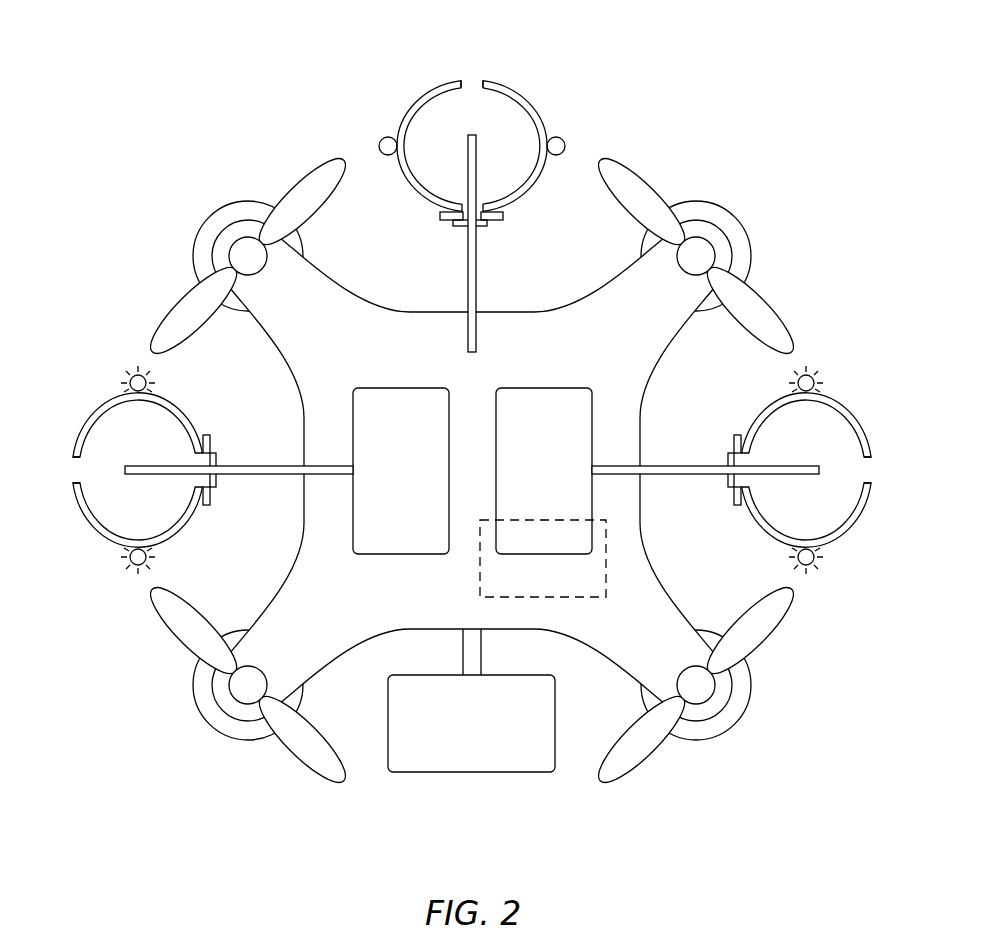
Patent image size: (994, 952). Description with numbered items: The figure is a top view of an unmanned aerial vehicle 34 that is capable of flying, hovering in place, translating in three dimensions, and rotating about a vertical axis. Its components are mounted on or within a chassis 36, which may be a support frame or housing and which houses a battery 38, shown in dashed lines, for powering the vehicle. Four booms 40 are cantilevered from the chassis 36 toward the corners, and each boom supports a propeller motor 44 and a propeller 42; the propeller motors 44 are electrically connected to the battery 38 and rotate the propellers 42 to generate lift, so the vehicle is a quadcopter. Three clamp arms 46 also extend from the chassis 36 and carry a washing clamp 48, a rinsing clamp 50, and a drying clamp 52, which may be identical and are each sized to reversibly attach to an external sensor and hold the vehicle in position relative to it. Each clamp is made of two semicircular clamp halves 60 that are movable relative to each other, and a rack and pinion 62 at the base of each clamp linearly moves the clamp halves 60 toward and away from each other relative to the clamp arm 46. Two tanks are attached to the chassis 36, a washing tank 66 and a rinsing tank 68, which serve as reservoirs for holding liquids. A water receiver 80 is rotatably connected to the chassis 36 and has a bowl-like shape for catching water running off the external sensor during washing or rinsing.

The unmanned aerial vehicle 34 is at (473, 425).
The chassis 36 is at (503, 312).
The battery 38 is at (478, 580).
The booms 40 is at (318, 269).
The propellers 42 is at (313, 167).
The propeller motors 44 is at (227, 203).
The clamp arms 46 is at (466, 290).
The washing clamp 48 is at (103, 403).
The rinsing clamp 50 is at (523, 90).
The drying clamp 52 is at (843, 403).
The clamp halves 60 is at (482, 80).
The rack and pinion 62 is at (492, 226).
The washing tank 66 is at (380, 558).
The rinsing tank 68 is at (560, 388).
The water receiver 80 is at (417, 772).